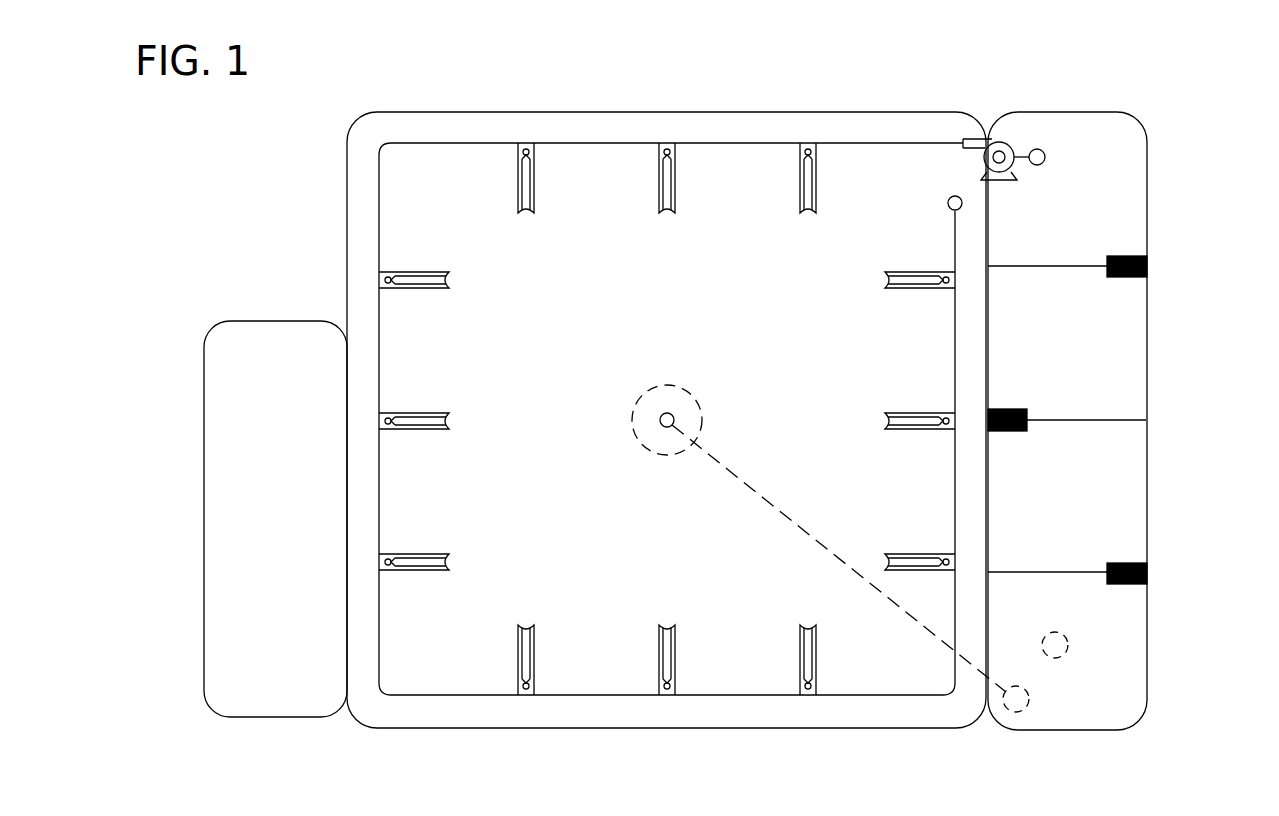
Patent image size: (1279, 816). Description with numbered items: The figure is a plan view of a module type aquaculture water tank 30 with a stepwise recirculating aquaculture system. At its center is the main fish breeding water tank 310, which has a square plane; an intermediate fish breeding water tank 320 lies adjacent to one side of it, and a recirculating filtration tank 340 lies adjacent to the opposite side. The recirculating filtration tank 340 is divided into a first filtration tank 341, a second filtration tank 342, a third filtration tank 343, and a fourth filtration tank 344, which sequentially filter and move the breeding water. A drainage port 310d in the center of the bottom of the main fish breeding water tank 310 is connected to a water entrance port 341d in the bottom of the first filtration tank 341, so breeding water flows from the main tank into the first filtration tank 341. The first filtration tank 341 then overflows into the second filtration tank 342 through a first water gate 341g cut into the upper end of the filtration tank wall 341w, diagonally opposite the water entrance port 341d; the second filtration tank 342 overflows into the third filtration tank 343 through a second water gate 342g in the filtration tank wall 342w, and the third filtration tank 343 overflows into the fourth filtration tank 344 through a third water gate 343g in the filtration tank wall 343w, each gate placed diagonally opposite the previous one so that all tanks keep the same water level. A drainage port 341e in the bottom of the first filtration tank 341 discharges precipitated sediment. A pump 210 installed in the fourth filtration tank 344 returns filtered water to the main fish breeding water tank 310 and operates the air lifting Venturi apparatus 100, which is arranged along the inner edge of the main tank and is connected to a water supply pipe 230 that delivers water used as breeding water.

The module type aquaculture water tank 30 is at (340, 110).
The air lifting Venturi apparatus 100 is at (800, 663).
The pump 210 is at (994, 140).
The water supply pipe 230 is at (734, 143).
The main fish breeding water tank 310 is at (503, 112).
The drainage port 310d is at (634, 408).
The intermediate fish breeding water tank 320 is at (204, 620).
The recirculating filtration tank 340 is at (1221, 206).
The first filtration tank 341 is at (1148, 640).
The filtration tank wall 341w is at (1016, 570).
The first water gate 341g is at (1113, 562).
The water entrance port 341d is at (1014, 713).
The drainage port 341e is at (1057, 660).
The second filtration tank 342 is at (1148, 503).
The filtration tank wall 342w is at (1094, 418).
The second water gate 342g is at (1010, 408).
The third filtration tank 343 is at (1148, 355).
The filtration tank wall 343w is at (1019, 264).
The third water gate 343g is at (1113, 255).
The fourth filtration tank 344 is at (1148, 222).